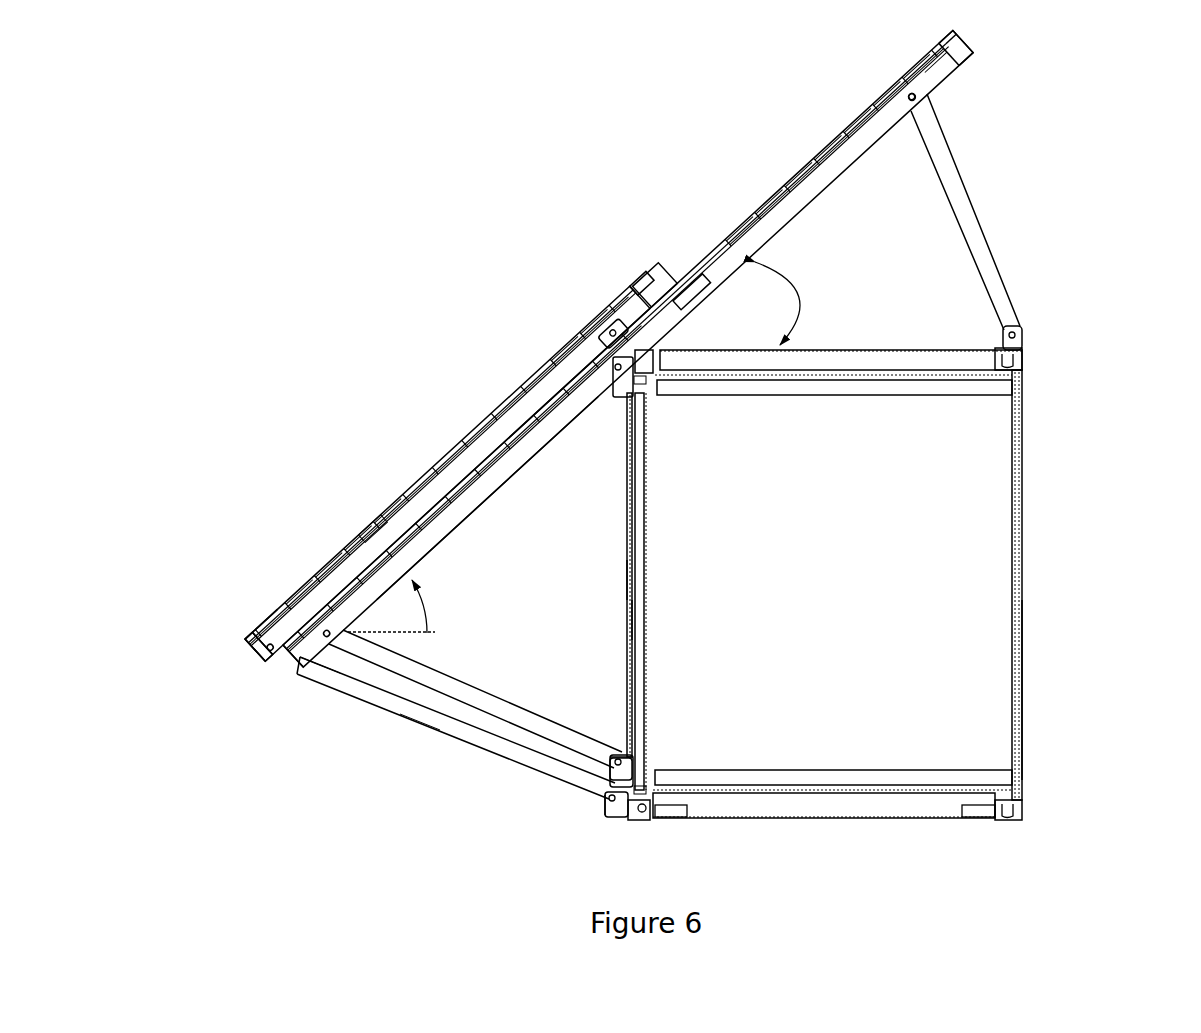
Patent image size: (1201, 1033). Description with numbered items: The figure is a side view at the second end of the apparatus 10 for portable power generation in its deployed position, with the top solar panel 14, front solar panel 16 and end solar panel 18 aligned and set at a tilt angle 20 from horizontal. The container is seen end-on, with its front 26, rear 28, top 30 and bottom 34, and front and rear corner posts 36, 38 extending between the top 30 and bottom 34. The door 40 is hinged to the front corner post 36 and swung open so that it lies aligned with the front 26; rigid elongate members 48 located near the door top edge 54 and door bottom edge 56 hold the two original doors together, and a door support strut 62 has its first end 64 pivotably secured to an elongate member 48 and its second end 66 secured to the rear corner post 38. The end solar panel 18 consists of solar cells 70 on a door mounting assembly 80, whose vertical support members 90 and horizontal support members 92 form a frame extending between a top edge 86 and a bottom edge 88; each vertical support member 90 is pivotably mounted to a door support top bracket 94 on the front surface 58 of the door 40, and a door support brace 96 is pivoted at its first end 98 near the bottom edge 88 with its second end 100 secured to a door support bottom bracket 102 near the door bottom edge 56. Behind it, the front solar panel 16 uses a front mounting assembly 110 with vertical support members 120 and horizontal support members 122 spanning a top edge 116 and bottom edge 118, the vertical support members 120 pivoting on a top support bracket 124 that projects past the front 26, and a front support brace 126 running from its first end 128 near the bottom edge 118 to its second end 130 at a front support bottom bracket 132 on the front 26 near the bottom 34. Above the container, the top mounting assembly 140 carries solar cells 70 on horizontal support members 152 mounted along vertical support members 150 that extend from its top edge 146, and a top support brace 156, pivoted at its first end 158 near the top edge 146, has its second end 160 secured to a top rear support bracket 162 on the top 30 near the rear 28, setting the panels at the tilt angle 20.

The apparatus for portable power generation 10 is at (343, 268).
The top solar panel 14 is at (757, 205).
The front solar panel 16 is at (383, 523).
The end solar panel 18 is at (480, 470).
The tilt angle 20 is at (812, 298).
The front 26 is at (625, 515).
The rear 28 is at (1022, 478).
The top 30 is at (913, 345).
The bottom 34 is at (875, 823).
The front corner post 36 is at (625, 610).
The rear corner post 38 is at (1022, 680).
The door 40 is at (647, 583).
The elongate member 48 is at (648, 365).
The door top edge 54 is at (640, 350).
The door bottom edge 56 is at (628, 812).
The front surface 58 is at (627, 575).
The door support strut 62 is at (960, 378).
The first end 64 is at (600, 372).
The second end 66 is at (1015, 388).
The solar cells 70 is at (917, 62).
The door mounting assembly 80 is at (353, 552).
The top edge 86 is at (687, 297).
The bottom edge 88 is at (292, 660).
The vertical support member 90 is at (333, 655).
The horizontal support member 92 is at (375, 527).
The door support top bracket 94 is at (600, 335).
The door support brace 96 is at (400, 705).
The first end 98 is at (318, 672).
The second end 100 is at (607, 767).
The door support bottom bracket 102 is at (607, 750).
The front mounting assembly 110 is at (272, 610).
The top edge 116 is at (645, 285).
The bottom edge 118 is at (245, 652).
The vertical support member 120 is at (255, 628).
The horizontal support member 122 is at (367, 522).
The top support bracket 124 is at (608, 307).
The front support brace 126 is at (425, 728).
The first end 128 is at (257, 663).
The second end 130 is at (605, 825).
The front support bottom bracket 132 is at (603, 807).
The top mounting assembly 140 is at (967, 58).
The top edge 146 is at (968, 40).
The vertical support member 150 is at (940, 68).
The horizontal support member 152 is at (878, 80).
The top support brace 156 is at (963, 195).
The first end 158 is at (930, 100).
The second end 160 is at (1027, 343).
The top rear support bracket 162 is at (1023, 350).